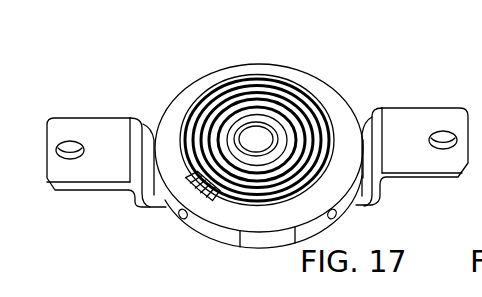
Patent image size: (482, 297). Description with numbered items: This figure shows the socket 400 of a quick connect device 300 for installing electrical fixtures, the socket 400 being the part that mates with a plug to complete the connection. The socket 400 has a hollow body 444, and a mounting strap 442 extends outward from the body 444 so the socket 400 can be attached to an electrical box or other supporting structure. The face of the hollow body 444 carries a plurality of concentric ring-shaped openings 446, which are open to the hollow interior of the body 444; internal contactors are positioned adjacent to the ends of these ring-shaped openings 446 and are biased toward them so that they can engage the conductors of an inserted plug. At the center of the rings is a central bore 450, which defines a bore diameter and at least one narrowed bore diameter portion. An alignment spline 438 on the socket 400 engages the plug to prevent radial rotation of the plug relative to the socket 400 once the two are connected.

The quick connect device 300 is at (149, 49).
The socket 400 is at (160, 89).
The alignment spline 438 is at (204, 196).
The mounting strap 442 is at (392, 118).
The hollow body 444 is at (289, 79).
The concentric ring-shaped openings 446 is at (244, 126).
The central bore 450 is at (240, 125).